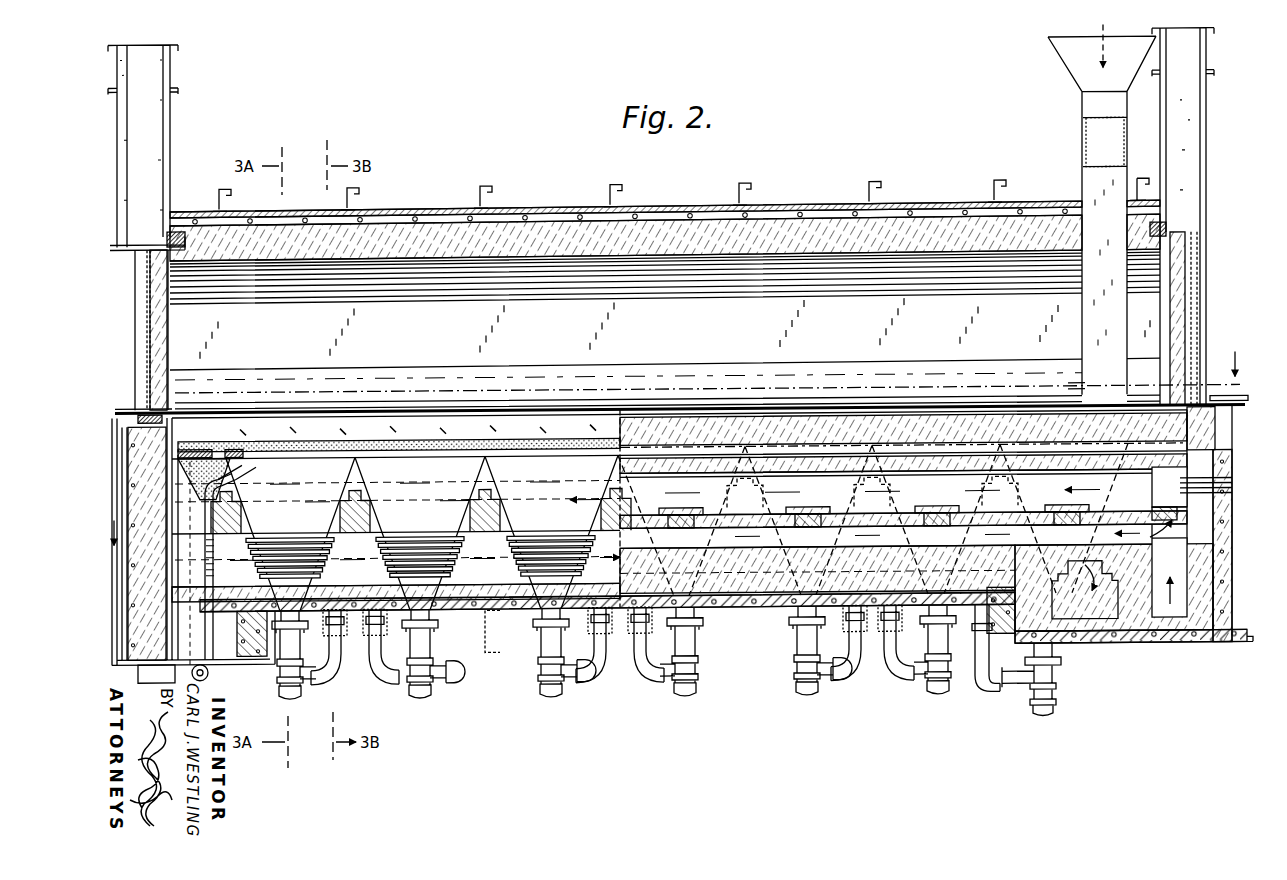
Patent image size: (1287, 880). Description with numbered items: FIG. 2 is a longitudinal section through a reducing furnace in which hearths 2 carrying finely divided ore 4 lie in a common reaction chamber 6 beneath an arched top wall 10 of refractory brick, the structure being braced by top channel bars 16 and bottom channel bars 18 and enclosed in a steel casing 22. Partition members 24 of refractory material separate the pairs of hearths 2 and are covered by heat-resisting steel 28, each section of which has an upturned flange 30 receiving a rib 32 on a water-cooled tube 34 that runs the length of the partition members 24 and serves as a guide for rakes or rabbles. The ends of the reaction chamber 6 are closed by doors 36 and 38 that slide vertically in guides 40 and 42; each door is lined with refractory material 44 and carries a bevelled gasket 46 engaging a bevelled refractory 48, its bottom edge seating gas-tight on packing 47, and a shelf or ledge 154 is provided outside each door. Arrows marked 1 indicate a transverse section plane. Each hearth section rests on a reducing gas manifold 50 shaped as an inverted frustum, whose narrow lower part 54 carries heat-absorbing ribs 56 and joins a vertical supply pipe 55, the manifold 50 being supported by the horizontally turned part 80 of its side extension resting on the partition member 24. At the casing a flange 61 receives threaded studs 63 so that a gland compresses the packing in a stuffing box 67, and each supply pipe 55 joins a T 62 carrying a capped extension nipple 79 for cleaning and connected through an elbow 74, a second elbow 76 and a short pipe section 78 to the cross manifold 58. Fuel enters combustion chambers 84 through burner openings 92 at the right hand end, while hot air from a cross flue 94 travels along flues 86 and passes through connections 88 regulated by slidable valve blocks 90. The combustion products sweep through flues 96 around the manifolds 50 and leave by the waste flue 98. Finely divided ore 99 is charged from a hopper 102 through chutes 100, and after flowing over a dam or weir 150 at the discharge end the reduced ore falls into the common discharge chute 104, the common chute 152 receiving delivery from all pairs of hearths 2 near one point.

The section arrow 1 is at (673, 440).
The hearths 2 is at (192, 447).
The finely divided ore 4 is at (399, 461).
The reaction chamber 6 is at (665, 333).
The arched top wall 10 is at (677, 248).
The top channel bars 16 is at (360, 195).
The bottom channel bars 18 is at (974, 641).
The steel casing 22 is at (540, 214).
The partition members 24 is at (490, 409).
The heat-resisting steel 28 is at (332, 413).
The upturned flange 30 is at (354, 407).
The rib 32 is at (555, 403).
The tube 34 is at (384, 410).
The door 36 is at (148, 337).
The door 38 is at (1197, 299).
The guide 40 is at (162, 143).
The guide 42 is at (1186, 186).
The refractory material 44 is at (150, 363).
The bevelled gasket 46 is at (172, 232).
The packing 47 is at (682, 543).
The bevelled refractory 48 is at (188, 247).
The manifold 50 is at (356, 480).
The part 54 is at (466, 590).
The supply pipe 55 is at (208, 672).
The heat-absorbing ribs 56 is at (392, 569).
The cross manifold 58 is at (376, 648).
The flange 61 is at (438, 630).
The T 62 is at (796, 666).
The threaded studs 63 is at (440, 638).
The stuffing box 67 is at (703, 627).
The elbow 74 is at (656, 689).
The second elbow 76 is at (350, 686).
The short pipe section 78 is at (843, 645).
The capped extension nipple 79 is at (566, 692).
The horizontally turned part 80 is at (216, 448).
The combustion chambers 84 is at (288, 479).
The flues 86 is at (916, 579).
The connections 88 is at (375, 507).
The valve blocks 90 is at (655, 506).
The burner openings 92 is at (1216, 488).
The cross flue 94 is at (1180, 600).
The flues 96 is at (396, 520).
The waste flue 98 is at (1158, 234).
The finely divided ore 99 is at (1083, 395).
The chutes 100 is at (1083, 180).
The hopper 102 is at (1080, 69).
The common discharge chute 104 is at (218, 506).
The dam or weir 150 is at (242, 411).
The common discharge chute 152 is at (186, 593).
The shelf or ledge 154 is at (1242, 404).